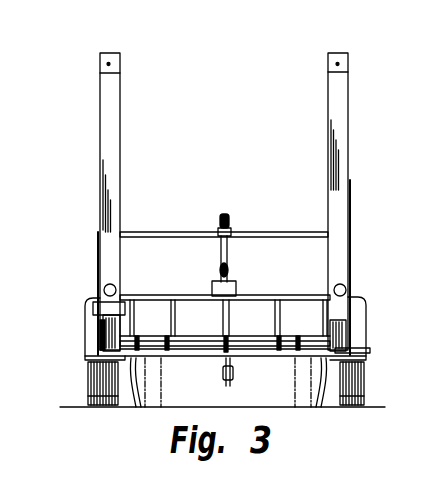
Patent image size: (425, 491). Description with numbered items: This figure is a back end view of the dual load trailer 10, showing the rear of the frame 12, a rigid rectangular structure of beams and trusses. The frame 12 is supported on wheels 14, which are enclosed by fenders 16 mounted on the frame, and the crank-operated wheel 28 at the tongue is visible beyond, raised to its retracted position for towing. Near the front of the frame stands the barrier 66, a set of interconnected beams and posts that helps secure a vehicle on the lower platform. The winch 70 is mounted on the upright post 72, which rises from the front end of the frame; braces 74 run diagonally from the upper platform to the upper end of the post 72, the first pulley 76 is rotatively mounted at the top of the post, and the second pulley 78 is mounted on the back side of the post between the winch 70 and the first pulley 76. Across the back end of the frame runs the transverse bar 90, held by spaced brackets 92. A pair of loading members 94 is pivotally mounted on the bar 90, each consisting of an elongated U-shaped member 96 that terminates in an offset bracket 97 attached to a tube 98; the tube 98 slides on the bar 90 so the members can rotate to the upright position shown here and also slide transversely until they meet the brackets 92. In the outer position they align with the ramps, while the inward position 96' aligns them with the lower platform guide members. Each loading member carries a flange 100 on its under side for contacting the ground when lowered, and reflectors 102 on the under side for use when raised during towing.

The dual load trailer 10 is at (206, 186).
The frame 12 is at (205, 355).
The wheels 14 is at (92, 386).
The fenders 16 is at (85, 305).
The wheel 28 is at (230, 382).
The barrier 66 is at (266, 295).
The winch 70 is at (212, 285).
The upright post 72 is at (221, 251).
The braces 74 is at (173, 232).
The first pulley 76 is at (229, 222).
The second pulley 78 is at (229, 272).
The transverse bar 90 is at (258, 347).
The brackets 92 is at (98, 348).
The loading members 94 is at (92, 202).
The elongated U-shaped member 96 is at (230, 201).
The inward position of loading members 96' is at (223, 407).
The offset bracket 97 is at (128, 322).
The tube 98 is at (134, 398).
The flange 100 is at (121, 73).
The reflectors 102 is at (108, 284).